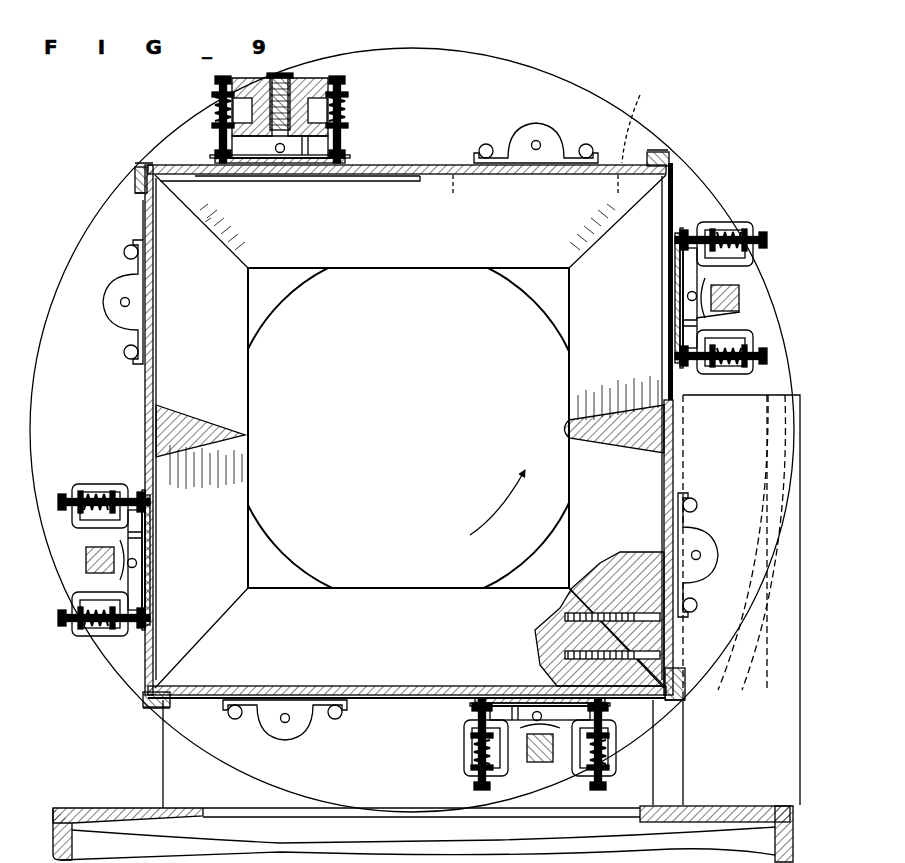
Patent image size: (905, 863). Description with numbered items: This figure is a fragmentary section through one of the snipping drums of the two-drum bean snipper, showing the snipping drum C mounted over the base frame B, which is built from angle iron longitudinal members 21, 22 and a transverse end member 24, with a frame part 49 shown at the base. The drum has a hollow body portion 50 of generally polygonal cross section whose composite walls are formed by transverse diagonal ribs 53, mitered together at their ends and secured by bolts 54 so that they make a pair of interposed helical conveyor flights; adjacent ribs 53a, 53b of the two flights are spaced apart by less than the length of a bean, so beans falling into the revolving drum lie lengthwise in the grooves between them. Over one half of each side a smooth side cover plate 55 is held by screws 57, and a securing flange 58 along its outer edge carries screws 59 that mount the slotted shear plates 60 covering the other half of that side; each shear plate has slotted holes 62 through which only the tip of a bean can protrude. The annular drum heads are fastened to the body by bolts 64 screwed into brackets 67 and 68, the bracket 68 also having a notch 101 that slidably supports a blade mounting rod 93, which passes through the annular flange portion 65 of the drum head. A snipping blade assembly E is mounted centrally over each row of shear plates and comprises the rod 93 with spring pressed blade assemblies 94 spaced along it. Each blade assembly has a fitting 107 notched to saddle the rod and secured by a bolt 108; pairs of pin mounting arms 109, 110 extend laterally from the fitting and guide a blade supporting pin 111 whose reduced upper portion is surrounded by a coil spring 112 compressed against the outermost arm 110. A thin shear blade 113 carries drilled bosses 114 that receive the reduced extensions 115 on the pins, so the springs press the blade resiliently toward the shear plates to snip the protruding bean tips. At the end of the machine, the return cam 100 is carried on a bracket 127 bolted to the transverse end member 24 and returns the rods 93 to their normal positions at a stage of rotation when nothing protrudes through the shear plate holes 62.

The angle iron longitudinal member 21 is at (165, 806).
The angle iron longitudinal member 22 is at (705, 808).
The transverse end member 24 is at (417, 840).
The support post 49 is at (170, 757).
The hollow body portion 50 is at (132, 214).
The transverse diagonal rib 53 is at (410, 431).
The flight rib 53a is at (238, 462).
The flight rib 53b is at (585, 377).
The bolt 54 is at (600, 648).
The side cover plate 55 is at (150, 232).
The screw 57 is at (462, 175).
The securing flange 58 is at (140, 183).
The screw 59 is at (137, 168).
The slotted shear plate 60 is at (282, 178).
The slotted hole 62 is at (195, 180).
The bolt 64 is at (120, 302).
The drum head annular flange portion 65 is at (610, 112).
The bracket 67 is at (120, 285).
The bracket 68 is at (285, 165).
The blade mounting rod 93 is at (205, 175).
The spring pressed blade assembly 94 is at (258, 90).
The blade support rod return cam 100 is at (768, 460).
The notch 101 is at (695, 320).
The fitting 107 is at (282, 80).
The bolt 108 is at (262, 92).
The pin mounting arm 109 is at (214, 122).
The pin mounting arm 110 is at (212, 95).
The blade supporting pin 111 is at (222, 80).
The coil spring 112 is at (214, 110).
The shear blade 113 is at (210, 165).
The drilled boss 114 is at (215, 163).
The extension 115 is at (222, 170).
The bracket 127 is at (726, 600).
The snipping blade assembly E is at (205, 92).
The snipping drum C is at (428, 598).
The base frame B is at (120, 810).